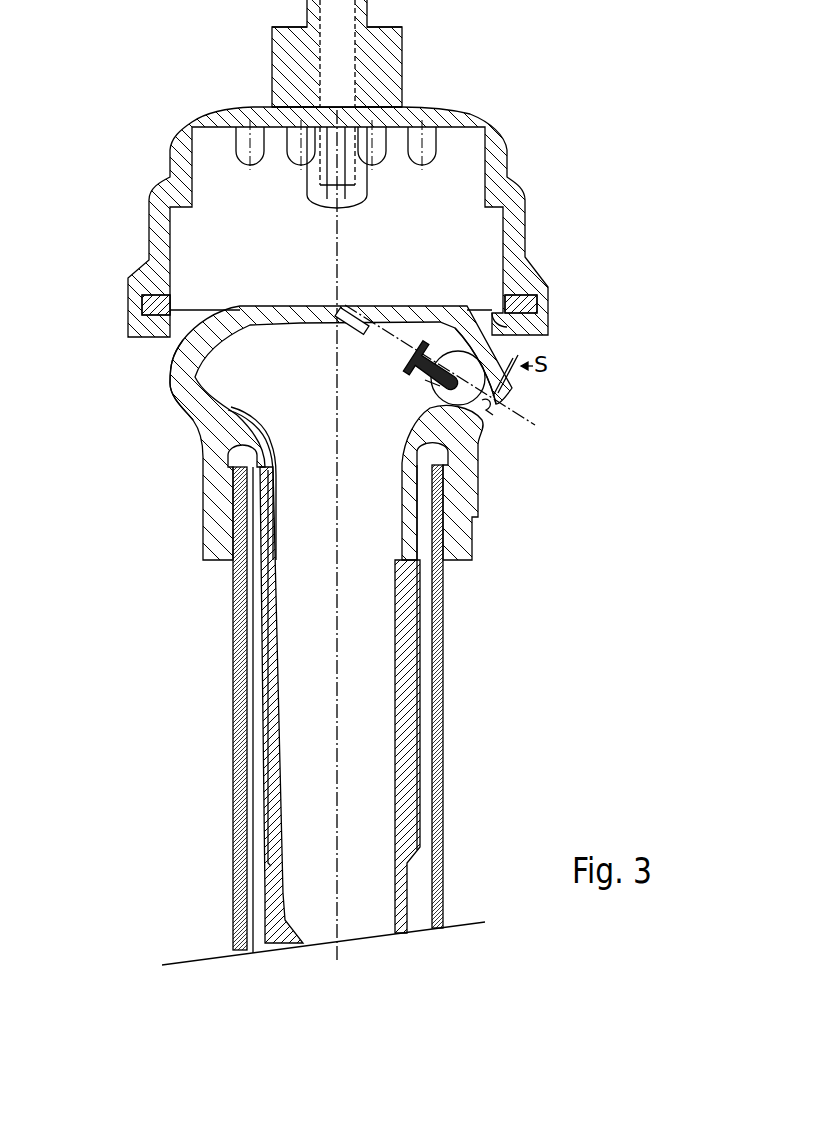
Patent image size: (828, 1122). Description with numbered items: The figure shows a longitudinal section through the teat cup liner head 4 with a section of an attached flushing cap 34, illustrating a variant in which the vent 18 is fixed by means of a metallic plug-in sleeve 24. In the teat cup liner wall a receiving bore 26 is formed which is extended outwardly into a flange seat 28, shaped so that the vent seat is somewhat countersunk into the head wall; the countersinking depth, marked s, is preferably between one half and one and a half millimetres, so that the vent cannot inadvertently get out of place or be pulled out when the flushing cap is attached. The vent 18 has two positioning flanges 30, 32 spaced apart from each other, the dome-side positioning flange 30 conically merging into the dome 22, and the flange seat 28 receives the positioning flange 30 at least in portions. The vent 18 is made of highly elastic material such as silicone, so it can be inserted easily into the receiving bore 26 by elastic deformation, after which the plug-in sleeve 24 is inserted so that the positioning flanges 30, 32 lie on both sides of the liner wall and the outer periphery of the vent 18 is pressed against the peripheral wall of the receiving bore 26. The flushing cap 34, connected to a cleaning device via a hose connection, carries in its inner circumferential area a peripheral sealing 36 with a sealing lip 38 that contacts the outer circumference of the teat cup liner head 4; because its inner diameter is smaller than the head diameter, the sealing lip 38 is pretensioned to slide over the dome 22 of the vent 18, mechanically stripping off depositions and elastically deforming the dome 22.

The teat cup liner head 4 is at (170, 373).
The vent 18 is at (507, 356).
The dome 22 is at (483, 400).
The plug-in sleeve 24 is at (354, 313).
The receiving bore 26 is at (490, 410).
The flange seat 28 is at (500, 387).
The dome-side positioning flange 30 is at (433, 383).
The positioning flange 32 is at (412, 373).
The flushing cap 34 is at (507, 143).
The peripheral sealing 36 is at (495, 322).
The sealing lip 38 is at (510, 320).